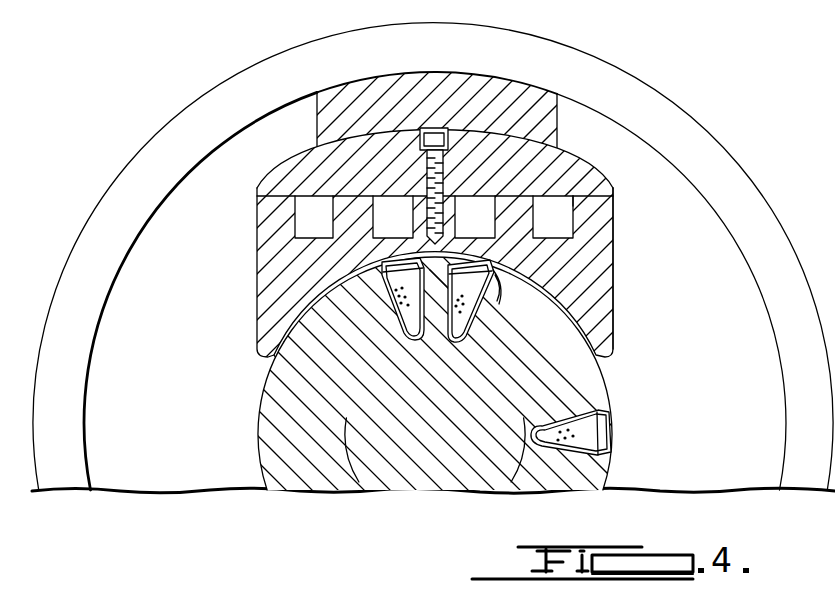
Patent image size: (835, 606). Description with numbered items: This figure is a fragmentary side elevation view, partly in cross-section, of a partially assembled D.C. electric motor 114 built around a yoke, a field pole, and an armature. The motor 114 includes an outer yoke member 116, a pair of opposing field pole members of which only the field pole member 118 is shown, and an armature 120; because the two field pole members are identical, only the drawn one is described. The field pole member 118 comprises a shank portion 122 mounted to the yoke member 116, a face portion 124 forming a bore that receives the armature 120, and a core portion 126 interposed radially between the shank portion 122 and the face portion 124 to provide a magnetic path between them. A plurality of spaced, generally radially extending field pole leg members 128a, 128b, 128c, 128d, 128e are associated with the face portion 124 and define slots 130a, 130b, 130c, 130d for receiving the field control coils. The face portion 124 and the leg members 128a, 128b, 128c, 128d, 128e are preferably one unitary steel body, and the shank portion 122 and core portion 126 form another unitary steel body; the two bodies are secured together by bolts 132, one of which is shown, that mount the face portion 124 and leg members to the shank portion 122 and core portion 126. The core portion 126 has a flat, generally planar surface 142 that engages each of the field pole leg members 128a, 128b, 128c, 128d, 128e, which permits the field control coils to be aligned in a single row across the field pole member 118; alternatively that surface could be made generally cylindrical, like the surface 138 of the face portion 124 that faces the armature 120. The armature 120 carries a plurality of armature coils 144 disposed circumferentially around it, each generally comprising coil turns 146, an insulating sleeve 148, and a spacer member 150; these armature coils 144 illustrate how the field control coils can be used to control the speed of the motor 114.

The D.C. electric motor 114 is at (88, 133).
The yoke member 116 is at (227, 90).
The field pole member 118 is at (613, 298).
The armature 120 is at (258, 423).
The shank portion 122 is at (325, 123).
The face portion 124 is at (257, 303).
The core portion 126 is at (600, 163).
The field pole leg member 128a is at (257, 212).
The field pole leg member 128b is at (360, 217).
The field pole leg member 128c is at (443, 203).
The field pole leg member 128d is at (520, 232).
The field pole leg member 128e is at (613, 221).
The slot 130a is at (312, 203).
The slot 130b is at (392, 204).
The slot 130c is at (472, 202).
The slot 130d is at (548, 203).
The bolt 132 is at (407, 160).
The surface 138 is at (270, 360).
The planar surface 142 is at (565, 207).
The armature coil 144 is at (390, 312).
The coil turns 146 is at (443, 330).
The insulating sleeve 148 is at (470, 337).
The spacer member 150 is at (543, 333).